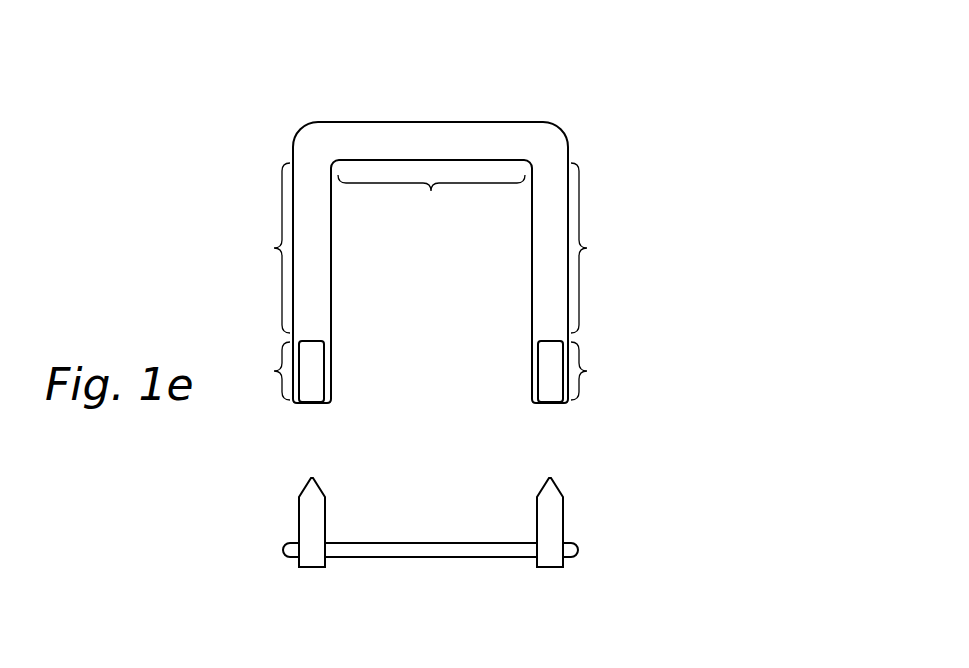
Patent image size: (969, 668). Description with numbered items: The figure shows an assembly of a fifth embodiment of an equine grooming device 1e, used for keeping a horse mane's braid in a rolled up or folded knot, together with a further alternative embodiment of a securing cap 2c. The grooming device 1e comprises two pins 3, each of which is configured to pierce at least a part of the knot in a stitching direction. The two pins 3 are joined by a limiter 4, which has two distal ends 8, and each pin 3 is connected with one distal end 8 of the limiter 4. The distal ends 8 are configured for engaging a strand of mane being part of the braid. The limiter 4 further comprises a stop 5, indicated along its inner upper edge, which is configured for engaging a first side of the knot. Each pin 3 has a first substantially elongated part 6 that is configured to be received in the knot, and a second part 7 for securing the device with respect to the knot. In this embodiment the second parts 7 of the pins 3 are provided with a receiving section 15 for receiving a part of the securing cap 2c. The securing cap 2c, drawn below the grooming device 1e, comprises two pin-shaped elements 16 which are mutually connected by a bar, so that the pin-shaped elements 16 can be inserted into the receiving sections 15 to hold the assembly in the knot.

The equine grooming device 1e is at (568, 74).
The securing cap 2c is at (432, 566).
The pin 3 is at (337, 292).
The limiter 4 is at (435, 117).
The stop 5 is at (431, 201).
The first substantially elongated part 6 is at (429, 248).
The second part 7 is at (430, 371).
The distal end 8 is at (287, 135).
The receiving section 15 is at (308, 408).
The pin-shaped element 16 is at (296, 512).